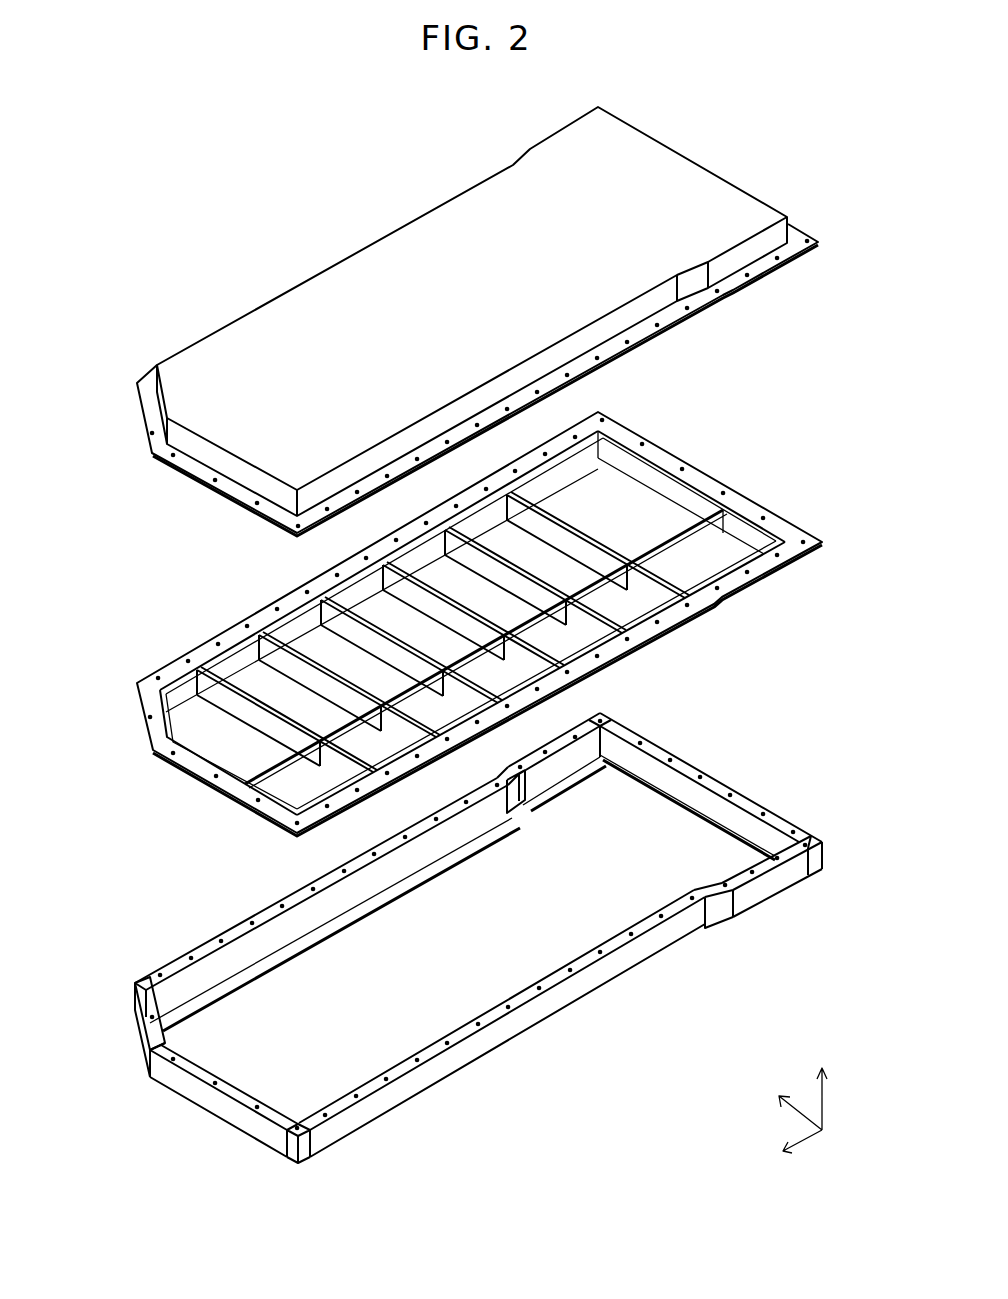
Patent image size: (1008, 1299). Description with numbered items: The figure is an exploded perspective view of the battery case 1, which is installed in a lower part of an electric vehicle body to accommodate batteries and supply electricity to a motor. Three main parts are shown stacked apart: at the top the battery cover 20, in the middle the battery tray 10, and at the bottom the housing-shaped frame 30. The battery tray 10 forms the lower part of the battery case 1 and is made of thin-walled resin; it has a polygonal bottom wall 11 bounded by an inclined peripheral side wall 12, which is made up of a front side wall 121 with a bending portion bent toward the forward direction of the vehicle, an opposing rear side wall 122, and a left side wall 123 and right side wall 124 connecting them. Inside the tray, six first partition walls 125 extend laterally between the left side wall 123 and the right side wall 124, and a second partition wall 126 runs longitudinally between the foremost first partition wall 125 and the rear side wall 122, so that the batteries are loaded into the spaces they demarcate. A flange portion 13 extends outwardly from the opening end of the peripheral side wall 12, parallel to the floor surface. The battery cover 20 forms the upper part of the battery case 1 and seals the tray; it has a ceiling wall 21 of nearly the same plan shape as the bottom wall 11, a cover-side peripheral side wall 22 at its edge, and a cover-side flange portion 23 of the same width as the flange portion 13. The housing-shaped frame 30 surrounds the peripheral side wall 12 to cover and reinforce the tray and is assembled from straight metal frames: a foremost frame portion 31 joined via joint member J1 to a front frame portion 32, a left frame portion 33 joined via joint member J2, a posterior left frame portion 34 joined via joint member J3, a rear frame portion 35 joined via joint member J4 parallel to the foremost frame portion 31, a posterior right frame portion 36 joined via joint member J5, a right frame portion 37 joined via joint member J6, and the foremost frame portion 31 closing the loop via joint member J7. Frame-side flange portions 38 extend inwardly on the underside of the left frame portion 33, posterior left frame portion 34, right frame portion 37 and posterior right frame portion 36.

The battery case 1 is at (182, 195).
The battery tray 10 is at (151, 623).
The bottom wall 11 is at (607, 490).
The peripheral side wall 12 is at (725, 471).
The flange portion 13 is at (780, 526).
The battery cover 20 is at (172, 320).
The ceiling wall 21 is at (485, 200).
The cover-side peripheral side wall 22 is at (780, 235).
The cover-side flange portion 23 is at (760, 275).
The housing-shaped frame 30 is at (138, 940).
The foremost frame portion 31 is at (200, 1080).
The front frame portion 32 is at (147, 1013).
The left frame portion 33 is at (225, 930).
The posterior left frame portion 34 is at (551, 751).
The rear frame portion 35 is at (690, 757).
The posterior right frame portion 36 is at (770, 888).
The right frame portion 37 is at (492, 1022).
The frame-side flange portion 38 is at (560, 783).
The front side wall 121 is at (175, 777).
The rear side wall 122 is at (655, 478).
The left side wall 123 is at (237, 632).
The right side wall 124 is at (668, 636).
The first partition wall 125 is at (507, 495).
The second partition wall 126 is at (343, 737).
The joint member J1 is at (150, 1052).
The joint member J2 is at (140, 990).
The joint member J3 is at (500, 773).
The joint member J4 is at (612, 715).
The joint member J5 is at (822, 838).
The joint member J6 is at (710, 917).
The joint member J7 is at (300, 1140).